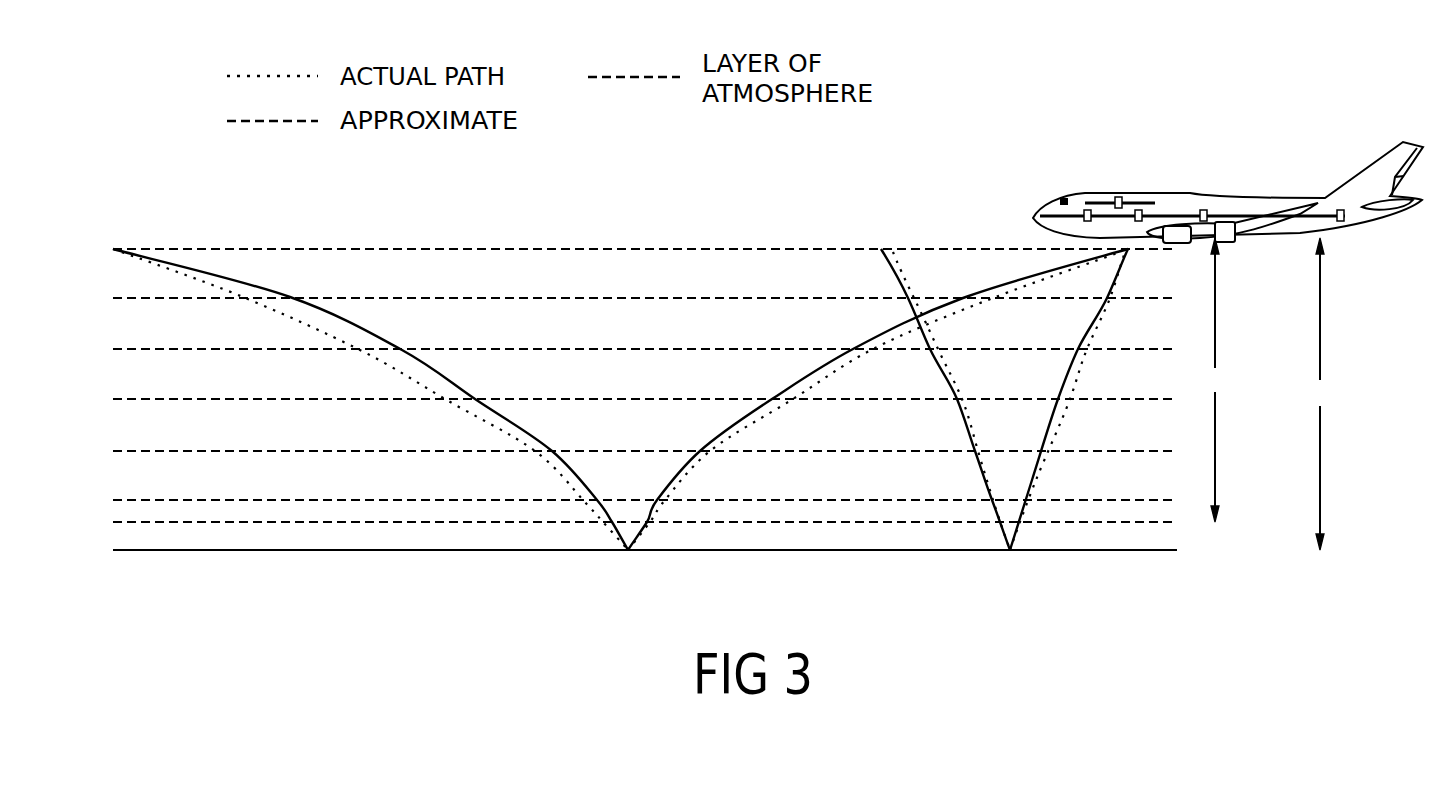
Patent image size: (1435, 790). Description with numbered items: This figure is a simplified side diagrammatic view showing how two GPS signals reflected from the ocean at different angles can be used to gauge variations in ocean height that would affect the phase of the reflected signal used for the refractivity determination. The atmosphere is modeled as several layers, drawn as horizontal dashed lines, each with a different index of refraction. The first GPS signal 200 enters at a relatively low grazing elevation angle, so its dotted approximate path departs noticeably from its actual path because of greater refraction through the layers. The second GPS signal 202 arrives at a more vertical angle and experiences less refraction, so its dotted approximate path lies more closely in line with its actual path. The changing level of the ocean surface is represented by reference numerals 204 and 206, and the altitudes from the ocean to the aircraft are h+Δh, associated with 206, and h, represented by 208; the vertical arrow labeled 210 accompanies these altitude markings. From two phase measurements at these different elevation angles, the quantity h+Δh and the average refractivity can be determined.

The first GPS signal 200 is at (365, 330).
The second GPS signal 202 is at (888, 268).
The ocean surface level 204 is at (1083, 522).
The ocean surface level 206 is at (1033, 550).
The altitude h 208 is at (1320, 497).
The altitude h of aircraft above reference layer 210 is at (1215, 485).